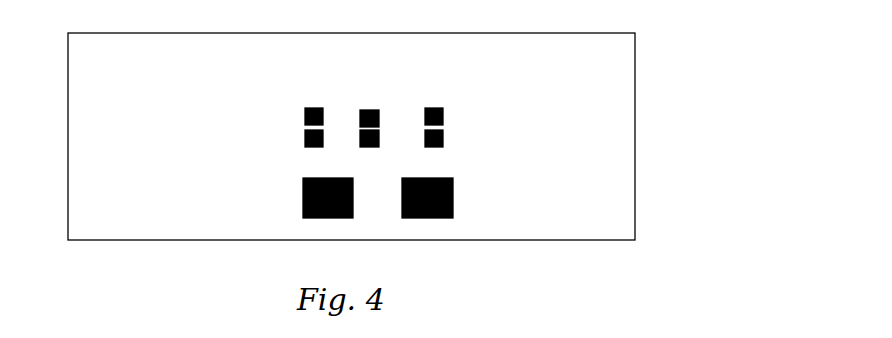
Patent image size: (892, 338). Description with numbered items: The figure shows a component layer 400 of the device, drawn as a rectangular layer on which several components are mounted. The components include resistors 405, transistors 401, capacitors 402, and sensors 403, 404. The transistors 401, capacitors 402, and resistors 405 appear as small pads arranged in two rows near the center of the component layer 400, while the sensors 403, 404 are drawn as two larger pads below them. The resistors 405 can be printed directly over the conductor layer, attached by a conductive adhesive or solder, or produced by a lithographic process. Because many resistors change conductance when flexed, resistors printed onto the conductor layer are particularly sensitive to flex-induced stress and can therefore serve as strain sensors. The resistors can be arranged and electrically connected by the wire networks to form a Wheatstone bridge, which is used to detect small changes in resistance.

The bump layout / substrate 400 is at (655, 159).
The transistors 401 is at (360, 117).
The capacitors 402 is at (443, 143).
The sensor 403 is at (453, 207).
The sensor 404 is at (305, 190).
The resistors 405 is at (307, 138).